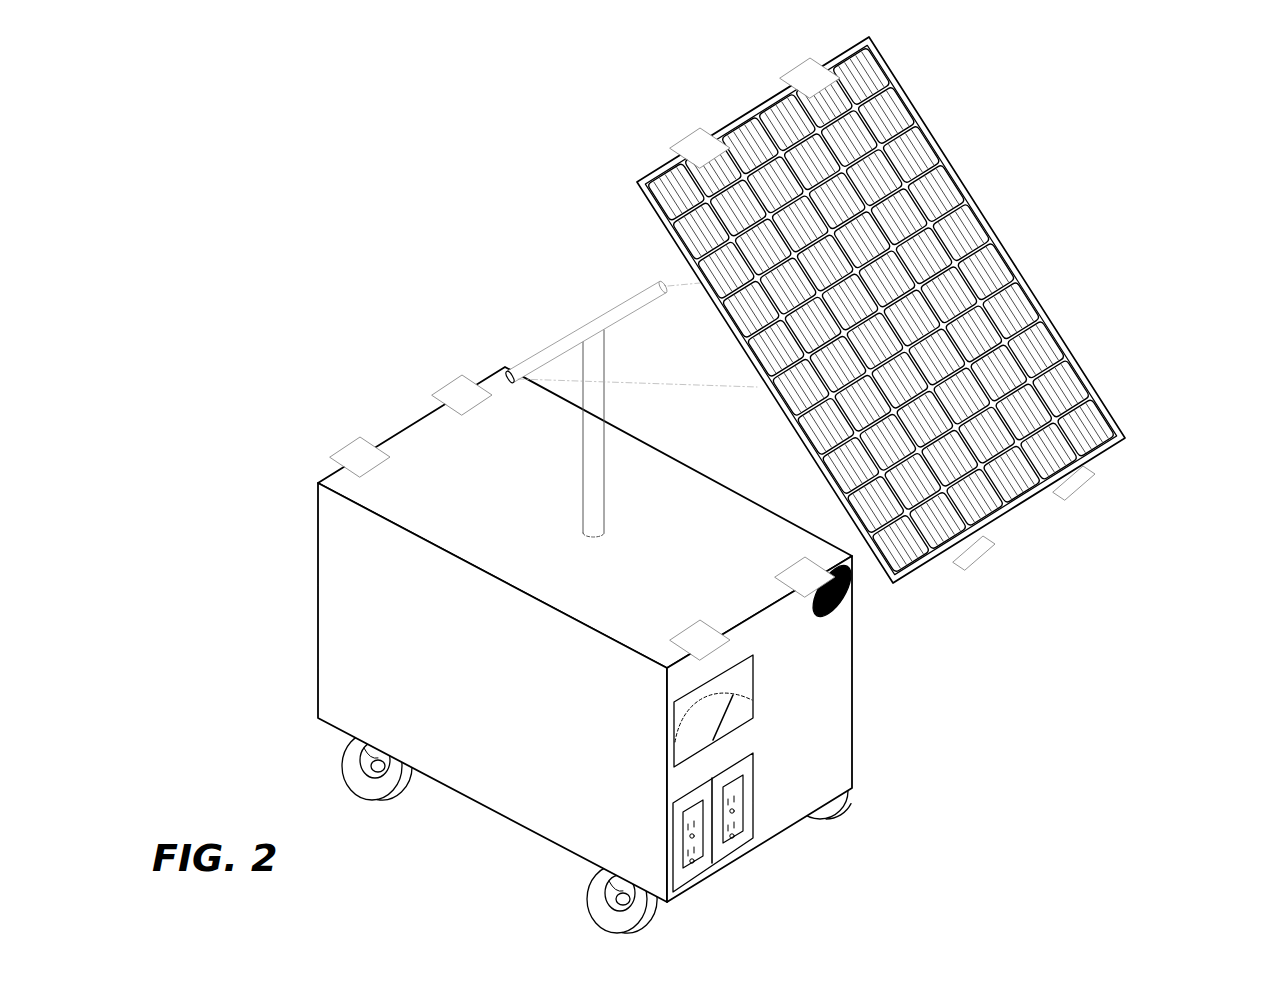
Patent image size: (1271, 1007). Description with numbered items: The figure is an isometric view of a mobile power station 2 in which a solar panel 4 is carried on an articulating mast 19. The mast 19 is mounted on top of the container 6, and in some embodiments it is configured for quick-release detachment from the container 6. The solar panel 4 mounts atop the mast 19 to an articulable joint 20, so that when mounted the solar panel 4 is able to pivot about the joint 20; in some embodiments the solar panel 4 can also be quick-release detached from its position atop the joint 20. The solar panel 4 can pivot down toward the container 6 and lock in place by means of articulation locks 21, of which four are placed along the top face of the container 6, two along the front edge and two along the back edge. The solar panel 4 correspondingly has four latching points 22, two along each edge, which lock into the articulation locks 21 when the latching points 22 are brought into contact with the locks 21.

The mobile power station 2 is at (337, 262).
The solar panel 4 is at (1003, 242).
The container 6 is at (488, 700).
The articulating mast 19 is at (590, 484).
The articulable joint 20 is at (656, 301).
The articulation locks 21 is at (711, 650).
The latching points 22 is at (821, 88).